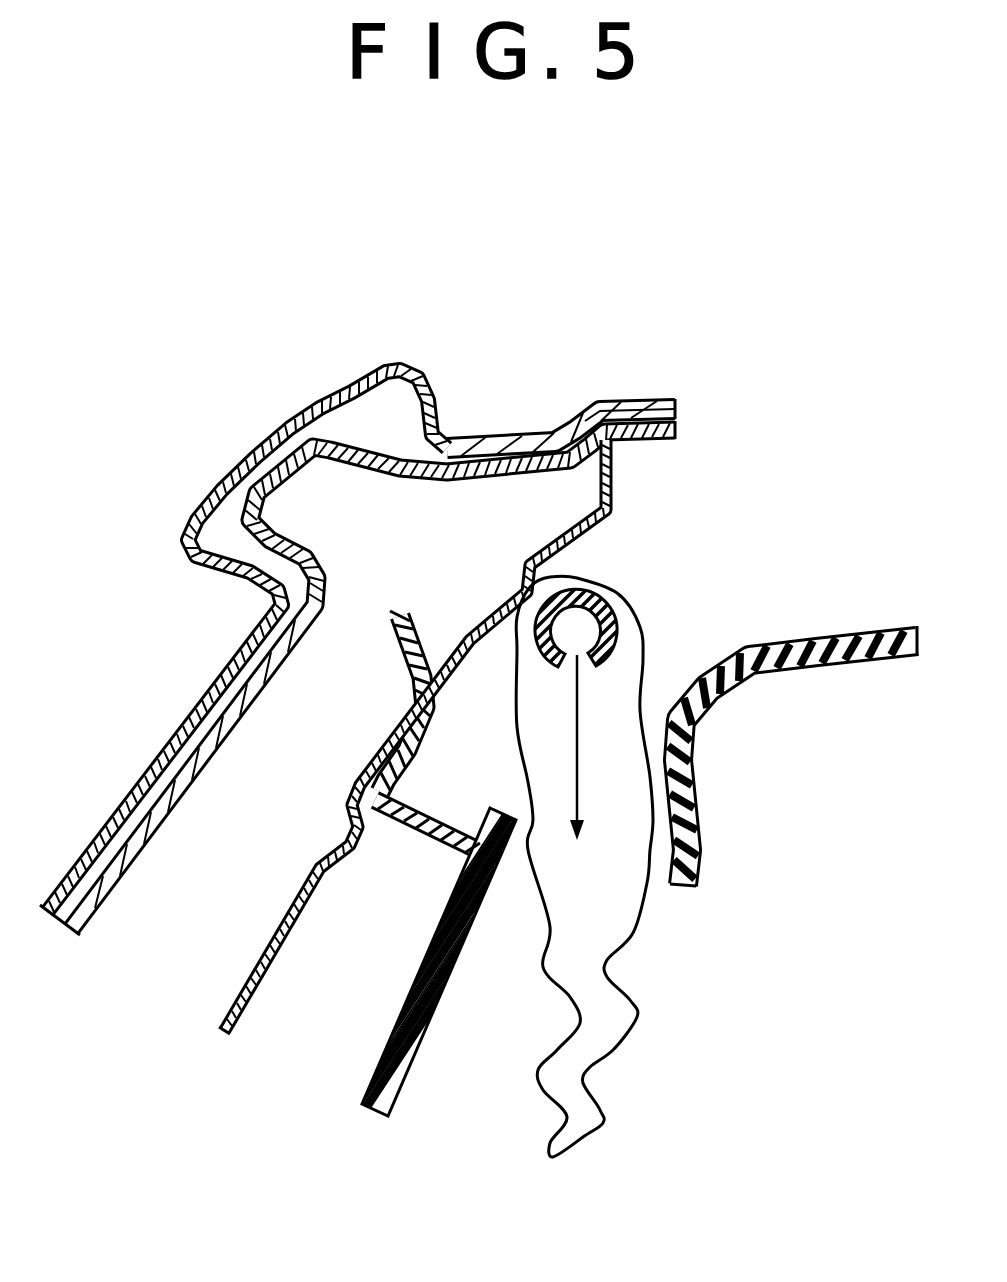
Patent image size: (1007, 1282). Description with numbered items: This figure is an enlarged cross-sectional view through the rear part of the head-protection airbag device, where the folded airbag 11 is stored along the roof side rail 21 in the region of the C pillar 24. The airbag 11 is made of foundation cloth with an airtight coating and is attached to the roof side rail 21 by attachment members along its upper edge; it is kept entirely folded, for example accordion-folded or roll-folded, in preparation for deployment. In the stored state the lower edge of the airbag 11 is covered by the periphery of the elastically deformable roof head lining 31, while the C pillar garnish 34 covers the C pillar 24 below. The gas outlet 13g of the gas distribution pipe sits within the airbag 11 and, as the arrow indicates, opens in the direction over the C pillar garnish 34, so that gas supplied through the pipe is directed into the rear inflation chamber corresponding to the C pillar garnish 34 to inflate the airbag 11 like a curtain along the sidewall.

The airbag 11 is at (613, 1050).
The gas outlet 13g is at (582, 660).
The roof side rail 21 is at (612, 478).
The C pillar 24 is at (278, 953).
The roof head lining 31 is at (820, 660).
The C pillar garnish 34 is at (417, 1040).